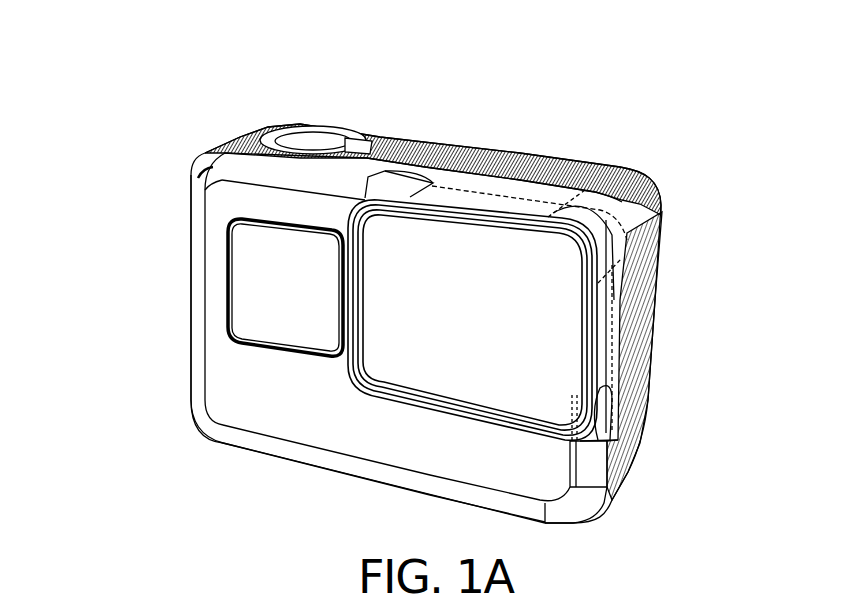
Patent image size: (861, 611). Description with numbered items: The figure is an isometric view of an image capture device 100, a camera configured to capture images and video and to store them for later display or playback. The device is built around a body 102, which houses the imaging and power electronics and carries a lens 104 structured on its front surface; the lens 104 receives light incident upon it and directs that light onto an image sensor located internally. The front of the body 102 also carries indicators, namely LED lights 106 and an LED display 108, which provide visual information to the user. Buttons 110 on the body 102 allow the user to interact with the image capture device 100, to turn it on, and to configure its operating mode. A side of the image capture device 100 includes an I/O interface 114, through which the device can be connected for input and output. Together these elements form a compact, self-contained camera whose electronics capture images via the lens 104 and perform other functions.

The image capture device 100 is at (765, 190).
The body 102 is at (574, 160).
The lens 104 is at (538, 340).
The LED lights 106 is at (203, 163).
The LED display 108 is at (240, 300).
The buttons 110 is at (313, 126).
The I/O interface 114 is at (634, 445).